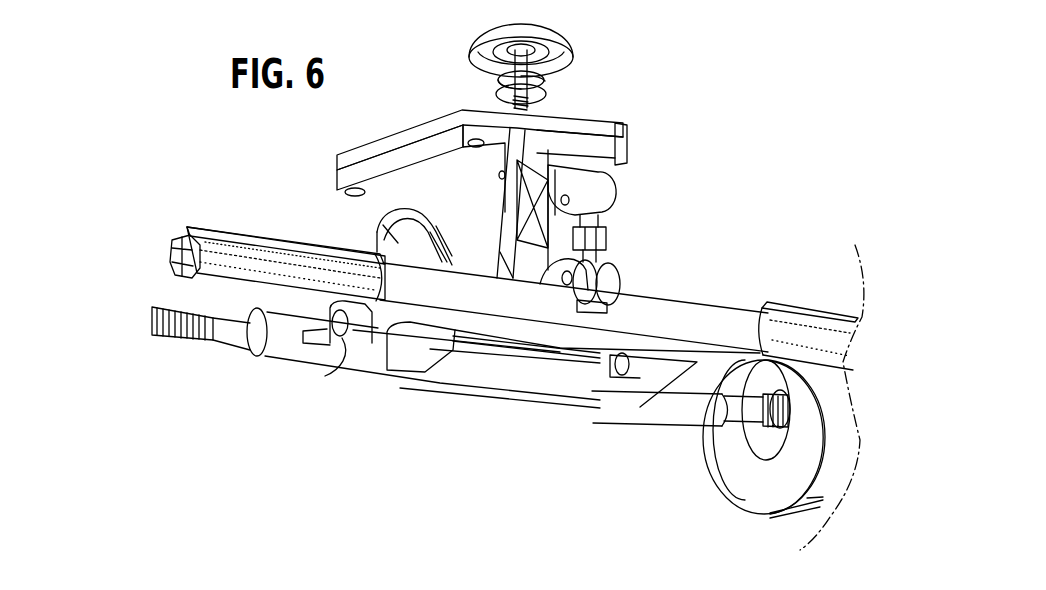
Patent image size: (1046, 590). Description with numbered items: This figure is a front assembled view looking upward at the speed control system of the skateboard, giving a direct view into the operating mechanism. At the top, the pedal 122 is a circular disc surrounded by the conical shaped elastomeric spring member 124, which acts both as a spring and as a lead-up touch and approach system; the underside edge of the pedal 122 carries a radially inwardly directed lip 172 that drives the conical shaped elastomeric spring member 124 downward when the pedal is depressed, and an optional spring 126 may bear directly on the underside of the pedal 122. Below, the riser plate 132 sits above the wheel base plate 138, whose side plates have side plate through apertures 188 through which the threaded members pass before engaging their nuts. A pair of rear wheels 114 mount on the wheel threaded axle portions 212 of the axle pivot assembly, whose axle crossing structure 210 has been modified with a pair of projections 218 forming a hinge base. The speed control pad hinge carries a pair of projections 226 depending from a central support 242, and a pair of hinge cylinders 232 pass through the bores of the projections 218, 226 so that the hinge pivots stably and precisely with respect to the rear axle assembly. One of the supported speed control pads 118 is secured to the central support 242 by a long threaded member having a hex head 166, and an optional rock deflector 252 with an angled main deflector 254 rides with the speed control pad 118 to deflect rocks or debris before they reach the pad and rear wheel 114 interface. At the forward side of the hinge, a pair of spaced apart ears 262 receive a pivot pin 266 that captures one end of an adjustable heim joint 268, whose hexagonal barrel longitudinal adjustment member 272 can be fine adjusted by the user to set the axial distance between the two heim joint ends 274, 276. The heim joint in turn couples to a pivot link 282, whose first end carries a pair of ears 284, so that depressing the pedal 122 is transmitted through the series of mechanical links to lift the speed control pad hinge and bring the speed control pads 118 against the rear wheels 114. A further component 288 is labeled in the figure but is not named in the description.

The rear wheels 114 is at (783, 550).
The supported speed control pads 118 is at (255, 258).
The pedal 122 is at (566, 64).
The conical shaped elastomeric spring member 124 is at (545, 30).
The spring 126 is at (500, 88).
The riser plate 132 is at (433, 143).
The wheel base plate 138 is at (489, 238).
The hex head 166 is at (180, 252).
The radially inwardly directed lip 172 is at (548, 48).
The side plate through apertures 188 is at (343, 205).
The axle crossing structure 210 is at (437, 390).
The wheel threaded axle portions 212 is at (230, 340).
The projections 218 is at (390, 360).
The projections 226 is at (330, 370).
The hinge cylinders 232 is at (335, 332).
The central support 242 is at (657, 308).
The rock deflector 252 is at (273, 233).
The angled main deflector 254 is at (210, 228).
The spaced apart ears 262 is at (623, 277).
The pivot pin 266 is at (525, 252).
The adjustable heim joint 268 is at (613, 255).
The hexagonal barrel longitudinal adjustment member 272 is at (603, 238).
The heim joint end 274 is at (575, 266).
The heim joint end 276 is at (587, 157).
The pivot link 282 is at (538, 182).
The ears 284 is at (607, 203).
The linkage 288 is at (500, 252).